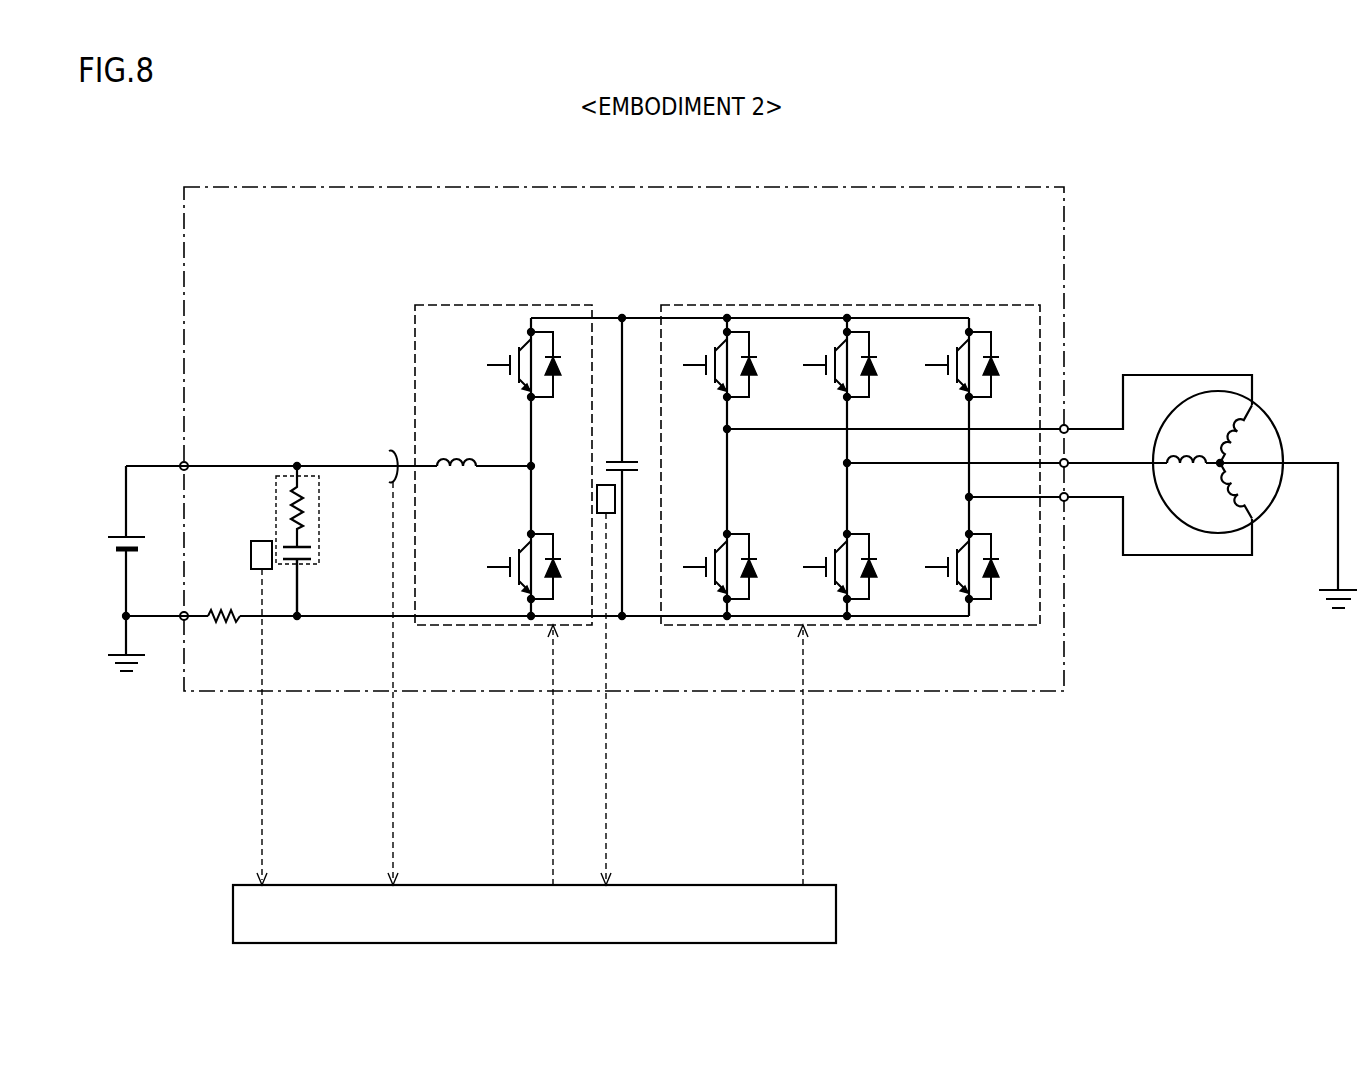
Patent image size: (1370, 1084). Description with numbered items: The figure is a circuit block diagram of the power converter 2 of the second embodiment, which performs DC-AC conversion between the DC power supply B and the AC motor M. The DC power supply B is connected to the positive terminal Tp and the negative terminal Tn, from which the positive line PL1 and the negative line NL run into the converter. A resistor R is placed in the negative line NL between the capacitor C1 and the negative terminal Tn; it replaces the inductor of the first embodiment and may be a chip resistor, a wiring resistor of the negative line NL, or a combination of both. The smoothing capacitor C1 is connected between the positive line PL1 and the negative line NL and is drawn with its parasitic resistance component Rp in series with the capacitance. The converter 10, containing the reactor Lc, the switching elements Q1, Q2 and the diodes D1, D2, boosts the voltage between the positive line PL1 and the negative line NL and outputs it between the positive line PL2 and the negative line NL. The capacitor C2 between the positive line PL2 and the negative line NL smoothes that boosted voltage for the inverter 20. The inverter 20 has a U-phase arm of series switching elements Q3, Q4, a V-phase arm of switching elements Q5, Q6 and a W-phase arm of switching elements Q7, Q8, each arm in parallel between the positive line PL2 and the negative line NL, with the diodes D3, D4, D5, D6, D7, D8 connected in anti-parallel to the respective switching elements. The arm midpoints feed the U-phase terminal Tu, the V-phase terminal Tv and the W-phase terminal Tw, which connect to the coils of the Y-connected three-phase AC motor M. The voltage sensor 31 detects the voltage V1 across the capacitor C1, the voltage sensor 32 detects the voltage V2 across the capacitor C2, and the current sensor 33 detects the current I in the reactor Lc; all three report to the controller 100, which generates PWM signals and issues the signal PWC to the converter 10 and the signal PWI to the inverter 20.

The power converter 2 is at (945, 187).
The converter 10 is at (540, 305).
The inverter 20 is at (990, 305).
The voltage sensor 31 is at (250, 556).
The voltage sensor 32 is at (605, 483).
The current sensor 33 is at (392, 449).
The controller 100 is at (705, 885).
The DC power supply B is at (115, 534).
The positive terminal Tp is at (182, 462).
The negative terminal Tn is at (182, 612).
The resistor R is at (228, 622).
The parasitic resistance component Rp is at (303, 514).
The capacitor C1 is at (308, 562).
The capacitor C2 is at (632, 457).
The positive line PL1 is at (352, 463).
The positive line PL2 is at (604, 314).
The negative line NL is at (352, 613).
The reactor Lc is at (484, 447).
The switching element Q1 is at (504, 361).
The switching element Q2 is at (504, 564).
The switching element Q3 is at (700, 361).
The switching element Q4 is at (700, 564).
The switching element Q5 is at (820, 361).
The switching element Q6 is at (820, 564).
The switching element Q7 is at (942, 361).
The switching element Q8 is at (942, 564).
The diode D1 is at (555, 370).
The diode D2 is at (555, 571).
The diode D3 is at (751, 370).
The diode D4 is at (751, 571).
The diode D5 is at (871, 370).
The diode D6 is at (871, 571).
The diode D7 is at (993, 370).
The diode D8 is at (993, 571).
The U-phase terminal Tu is at (1066, 426).
The V-phase terminal Tv is at (1066, 460).
The W-phase terminal Tw is at (1066, 494).
The AC motor M is at (1273, 408).
The voltage V1 is at (274, 727).
The current I is at (399, 683).
The signal PWC is at (530, 755).
The voltage V2 is at (619, 699).
The signal PWI is at (823, 755).